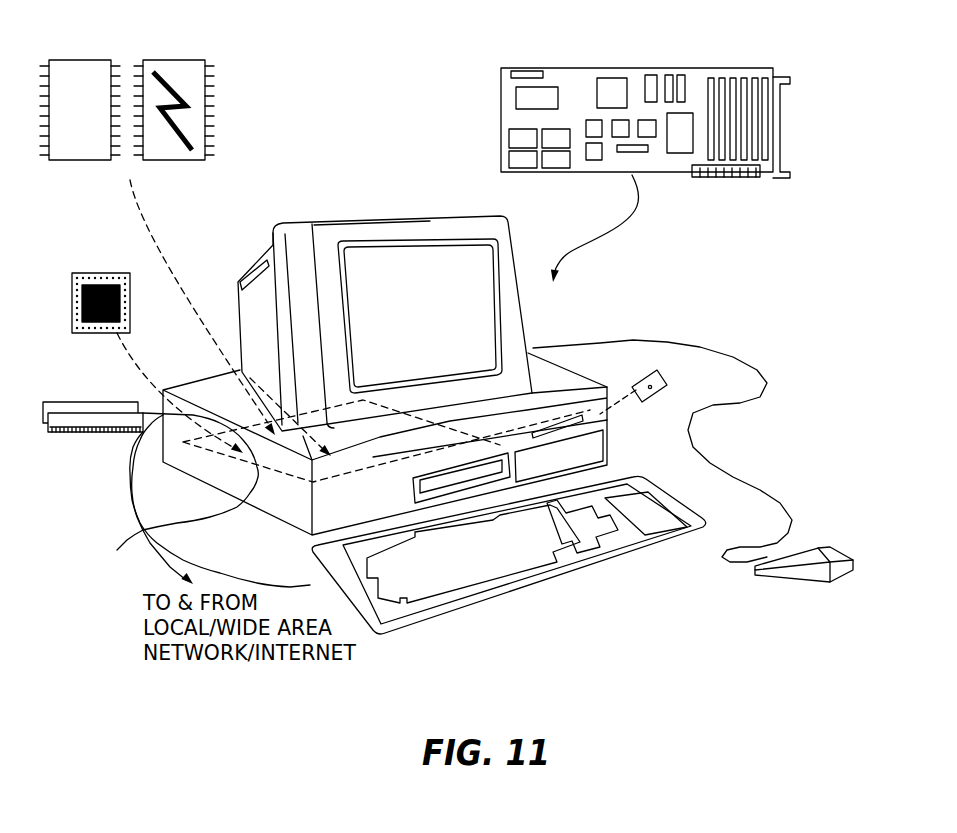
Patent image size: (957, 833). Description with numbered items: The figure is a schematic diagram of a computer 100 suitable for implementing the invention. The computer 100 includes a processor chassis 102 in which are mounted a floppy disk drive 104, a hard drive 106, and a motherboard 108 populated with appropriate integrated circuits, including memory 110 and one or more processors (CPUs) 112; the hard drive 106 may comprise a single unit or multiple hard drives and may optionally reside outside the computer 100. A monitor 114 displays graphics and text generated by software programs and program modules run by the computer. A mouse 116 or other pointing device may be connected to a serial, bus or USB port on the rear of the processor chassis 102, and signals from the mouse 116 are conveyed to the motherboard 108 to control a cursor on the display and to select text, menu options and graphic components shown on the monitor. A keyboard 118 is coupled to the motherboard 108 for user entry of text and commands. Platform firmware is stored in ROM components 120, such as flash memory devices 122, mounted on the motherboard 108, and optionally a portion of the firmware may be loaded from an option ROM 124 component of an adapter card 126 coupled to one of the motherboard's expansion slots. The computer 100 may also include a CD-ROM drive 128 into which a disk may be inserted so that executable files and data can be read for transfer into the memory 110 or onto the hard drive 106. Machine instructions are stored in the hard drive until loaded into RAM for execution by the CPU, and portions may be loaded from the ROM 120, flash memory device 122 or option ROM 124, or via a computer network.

The computer 100 is at (524, 610).
The processor chassis 102 is at (618, 406).
The floppy disk drive 104 is at (580, 413).
The hard drive 106 is at (613, 445).
The motherboard 108 is at (175, 490).
The memory 110 is at (68, 408).
The processor (CPU) 112 is at (130, 318).
The monitor 114 is at (518, 275).
The mouse 116 is at (833, 582).
The keyboard 118 is at (602, 568).
The ROM component 120 is at (80, 153).
The flash memory device 122 is at (177, 153).
The option ROM 124 is at (520, 99).
The adapter card 126 is at (773, 113).
The CD-ROM drive 128 is at (413, 493).